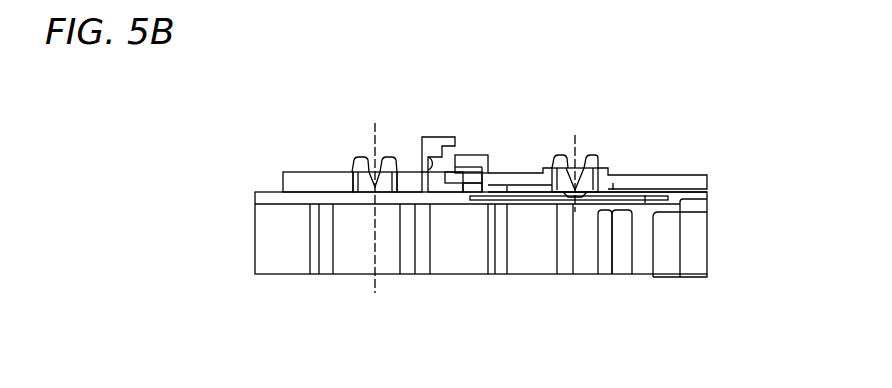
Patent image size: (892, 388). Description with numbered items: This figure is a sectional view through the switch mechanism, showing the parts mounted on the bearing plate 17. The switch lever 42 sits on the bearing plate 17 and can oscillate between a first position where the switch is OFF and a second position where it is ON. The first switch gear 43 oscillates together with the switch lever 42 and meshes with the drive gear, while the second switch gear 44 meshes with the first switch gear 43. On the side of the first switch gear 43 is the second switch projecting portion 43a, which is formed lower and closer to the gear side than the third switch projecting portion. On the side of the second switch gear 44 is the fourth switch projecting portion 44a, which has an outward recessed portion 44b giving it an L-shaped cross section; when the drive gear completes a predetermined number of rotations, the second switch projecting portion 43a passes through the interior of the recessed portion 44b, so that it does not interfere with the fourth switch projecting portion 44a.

The bearing plate 17 is at (527, 265).
The switch lever 42 is at (590, 160).
The first switch gear 43 is at (688, 178).
The second switch projecting portion 43a is at (474, 153).
The second switch gear 44 is at (300, 177).
The fourth switch projecting portion 44a is at (438, 136).
The recessed portion 44b is at (428, 155).